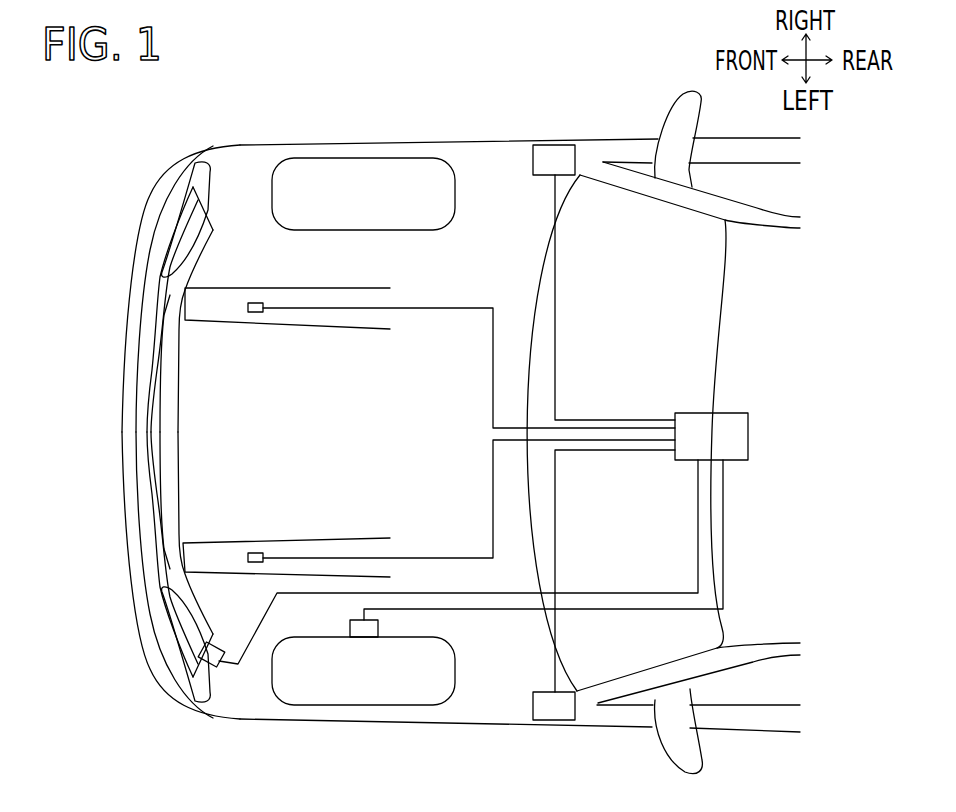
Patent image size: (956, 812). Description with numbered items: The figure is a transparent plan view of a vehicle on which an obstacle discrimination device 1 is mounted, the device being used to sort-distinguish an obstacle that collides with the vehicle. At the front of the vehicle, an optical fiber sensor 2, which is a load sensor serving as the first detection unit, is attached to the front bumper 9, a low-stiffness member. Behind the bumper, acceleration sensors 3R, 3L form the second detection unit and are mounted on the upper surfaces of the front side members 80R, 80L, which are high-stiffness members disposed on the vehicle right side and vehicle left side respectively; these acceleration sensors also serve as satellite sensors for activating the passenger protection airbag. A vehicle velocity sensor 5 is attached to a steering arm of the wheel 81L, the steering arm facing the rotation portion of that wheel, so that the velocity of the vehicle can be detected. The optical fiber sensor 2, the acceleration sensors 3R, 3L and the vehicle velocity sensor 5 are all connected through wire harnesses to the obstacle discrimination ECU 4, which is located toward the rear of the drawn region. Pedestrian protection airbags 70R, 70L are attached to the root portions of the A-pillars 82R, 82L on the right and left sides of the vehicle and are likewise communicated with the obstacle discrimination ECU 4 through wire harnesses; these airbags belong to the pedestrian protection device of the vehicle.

The obstacle discrimination device 1 is at (186, 119).
The optical fiber sensor 2 is at (203, 667).
The acceleration sensor 3R is at (255, 303).
The acceleration sensor 3L is at (255, 553).
The obstacle discrimination ECU 4 is at (697, 413).
The vehicle velocity sensor 5 is at (348, 630).
The front bumper 9 is at (132, 298).
The pedestrian protection airbag 70R is at (555, 145).
The pedestrian protection airbag 70L is at (555, 720).
The front side member 80R is at (316, 290).
The front side member 80L is at (316, 541).
The wheel 81L is at (363, 705).
The A-pillar 82R is at (583, 163).
The A-pillar 82L is at (596, 698).